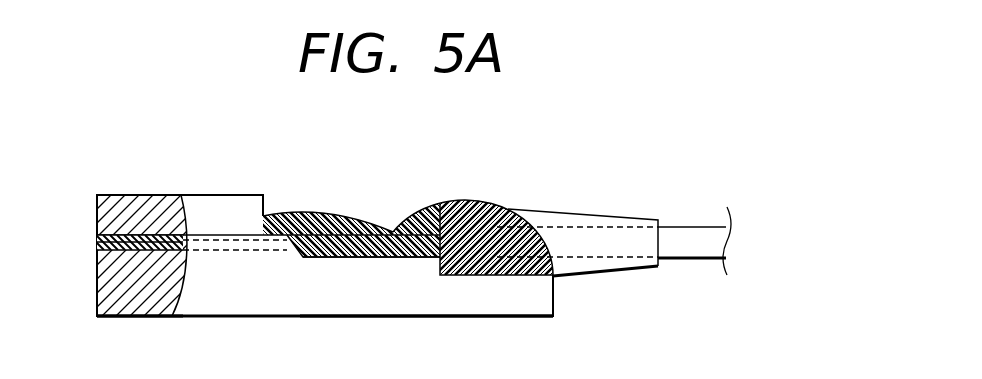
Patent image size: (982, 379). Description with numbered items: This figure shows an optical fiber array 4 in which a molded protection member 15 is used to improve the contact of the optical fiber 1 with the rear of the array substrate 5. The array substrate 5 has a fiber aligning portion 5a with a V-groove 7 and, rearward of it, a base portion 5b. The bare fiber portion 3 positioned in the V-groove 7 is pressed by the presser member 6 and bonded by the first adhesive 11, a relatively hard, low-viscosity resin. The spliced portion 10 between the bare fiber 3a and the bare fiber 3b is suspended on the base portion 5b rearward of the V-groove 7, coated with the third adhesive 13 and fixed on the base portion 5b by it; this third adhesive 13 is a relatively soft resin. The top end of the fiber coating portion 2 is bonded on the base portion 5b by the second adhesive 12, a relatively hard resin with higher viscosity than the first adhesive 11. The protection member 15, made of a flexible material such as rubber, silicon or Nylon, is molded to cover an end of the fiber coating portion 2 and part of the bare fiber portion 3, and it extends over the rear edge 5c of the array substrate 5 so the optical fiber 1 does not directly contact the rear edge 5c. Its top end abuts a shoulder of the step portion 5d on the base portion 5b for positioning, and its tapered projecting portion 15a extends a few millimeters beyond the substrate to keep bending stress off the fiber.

The optical fiber 1 is at (563, 200).
The fiber coating portion 2 is at (690, 236).
The bare fiber portion 3 is at (280, 123).
The bare fiber 3a is at (330, 213).
The bare fiber 3b is at (163, 235).
The optical fiber array 4 is at (215, 318).
The array substrate 5 is at (306, 308).
The fiber aligning portion 5a is at (122, 308).
The base portion 5b is at (413, 257).
The rear edge 5c is at (556, 276).
The step portion 5d is at (460, 277).
The presser member 6 is at (128, 208).
The V-groove 7 is at (110, 250).
The spliced portion 10 is at (322, 258).
The first adhesive 11 is at (97, 241).
The second adhesive 12 is at (470, 205).
The third adhesive 13 is at (352, 240).
The protection member 15 is at (605, 218).
The projecting portion 15a is at (622, 270).